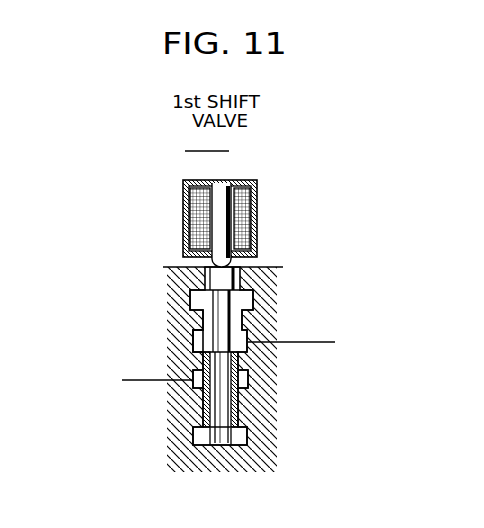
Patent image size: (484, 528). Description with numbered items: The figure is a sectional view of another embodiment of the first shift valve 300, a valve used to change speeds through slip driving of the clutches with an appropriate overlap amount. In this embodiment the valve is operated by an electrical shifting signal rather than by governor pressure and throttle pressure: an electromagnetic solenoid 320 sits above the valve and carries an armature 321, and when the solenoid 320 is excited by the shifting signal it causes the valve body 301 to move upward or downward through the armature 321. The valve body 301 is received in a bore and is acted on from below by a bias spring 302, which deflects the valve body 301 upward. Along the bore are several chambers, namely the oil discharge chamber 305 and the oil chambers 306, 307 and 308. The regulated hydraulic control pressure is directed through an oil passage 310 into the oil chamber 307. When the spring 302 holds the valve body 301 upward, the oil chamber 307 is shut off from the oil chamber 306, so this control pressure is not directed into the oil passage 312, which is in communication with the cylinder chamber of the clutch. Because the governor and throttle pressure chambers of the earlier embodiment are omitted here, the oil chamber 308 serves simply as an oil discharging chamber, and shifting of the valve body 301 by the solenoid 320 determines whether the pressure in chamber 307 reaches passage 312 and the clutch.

The first shift valve 300 is at (207, 140).
The valve body 301 is at (243, 281).
The bias spring 302 is at (213, 440).
The oil discharge chamber 305 is at (196, 299).
The oil chamber 306 is at (196, 338).
The oil chamber 307 is at (250, 381).
The oil chamber 308 is at (252, 437).
The oil passage 310 is at (142, 380).
The oil passage 312 is at (295, 342).
The electromagnetic solenoid 320 is at (252, 200).
The armature 321 is at (246, 224).